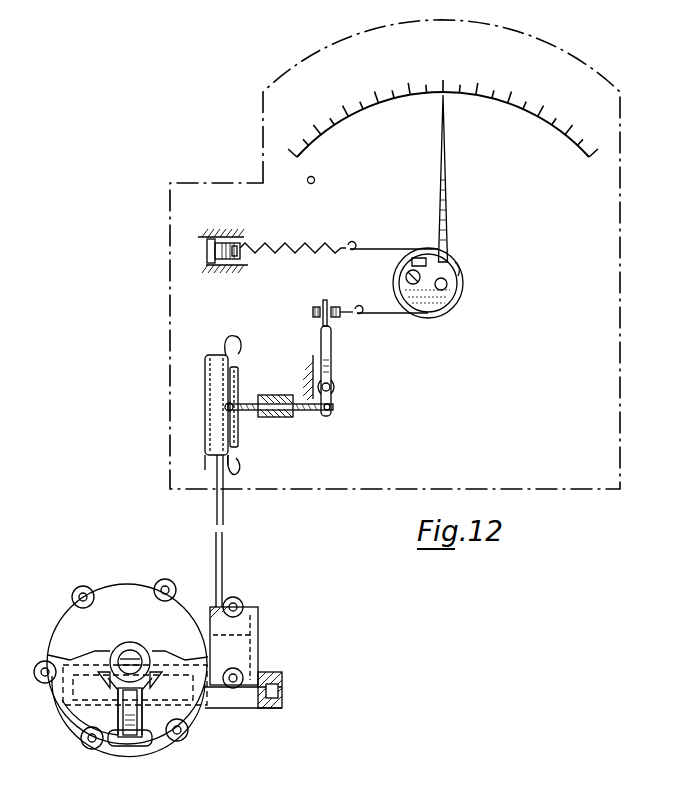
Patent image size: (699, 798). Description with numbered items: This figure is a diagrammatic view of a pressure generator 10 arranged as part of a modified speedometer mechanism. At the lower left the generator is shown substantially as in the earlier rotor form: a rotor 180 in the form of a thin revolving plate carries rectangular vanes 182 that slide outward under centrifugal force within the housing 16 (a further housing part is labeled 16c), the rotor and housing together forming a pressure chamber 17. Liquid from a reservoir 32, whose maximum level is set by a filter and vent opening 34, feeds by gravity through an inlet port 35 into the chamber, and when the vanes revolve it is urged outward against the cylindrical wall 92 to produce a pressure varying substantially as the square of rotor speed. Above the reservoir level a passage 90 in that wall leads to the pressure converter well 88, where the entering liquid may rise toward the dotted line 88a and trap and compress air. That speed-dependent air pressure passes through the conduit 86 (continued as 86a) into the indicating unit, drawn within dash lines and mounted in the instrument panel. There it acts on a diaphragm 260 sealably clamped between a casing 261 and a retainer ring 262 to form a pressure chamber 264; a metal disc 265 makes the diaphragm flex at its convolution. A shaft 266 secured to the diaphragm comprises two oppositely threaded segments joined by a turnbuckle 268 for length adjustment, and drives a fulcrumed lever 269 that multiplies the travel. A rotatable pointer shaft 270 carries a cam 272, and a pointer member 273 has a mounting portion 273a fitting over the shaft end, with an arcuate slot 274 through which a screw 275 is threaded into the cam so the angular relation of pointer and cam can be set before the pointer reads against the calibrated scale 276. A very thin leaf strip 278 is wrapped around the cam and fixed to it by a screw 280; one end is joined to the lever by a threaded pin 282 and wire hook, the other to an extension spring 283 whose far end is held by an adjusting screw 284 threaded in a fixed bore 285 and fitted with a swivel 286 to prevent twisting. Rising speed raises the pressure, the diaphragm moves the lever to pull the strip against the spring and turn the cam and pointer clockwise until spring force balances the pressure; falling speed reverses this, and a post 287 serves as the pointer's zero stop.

The pressure generator 10 is at (80, 583).
The housing 16 is at (208, 690).
The housing cover 16c is at (72, 617).
The pressure chamber 17 is at (110, 725).
The reservoir 32 is at (278, 692).
The filter and vent opening 34 is at (265, 672).
The inlet port 35 is at (100, 680).
The conduit 86 is at (222, 557).
The rod extension 86a is at (222, 504).
The pressure converter 88 is at (247, 610).
The liquid level line 88a is at (245, 635).
The passage 90 is at (214, 672).
The cylindrical wall 92 is at (100, 718).
The rotor 180 is at (115, 742).
The vanes 182 is at (145, 742).
The diaphragm 260 is at (238, 367).
The casing 261 is at (205, 362).
The retainer ring 262 is at (234, 344).
The pressure chamber 264 is at (215, 417).
The metal disc 265 is at (240, 432).
The shaft 266 is at (305, 411).
The turnbuckle 268 is at (276, 396).
The fulcrumed lever 269 is at (333, 358).
The pointer shaft 270 is at (445, 279).
The cam 272 is at (395, 283).
The pointer member 273 is at (449, 153).
The mounting portion 273a is at (457, 298).
The arcuate slot 274 is at (420, 260).
The screw 275 is at (409, 272).
The calibrated scale 276 is at (355, 118).
The leaf strip 278 is at (365, 249).
The screw 280 is at (456, 266).
The threaded pin 282 is at (315, 311).
The extension spring 283 is at (296, 248).
The adjusting screw 284 is at (215, 263).
The fixed bore 285 is at (203, 243).
The swivel 286 is at (240, 256).
The post 287 is at (308, 183).